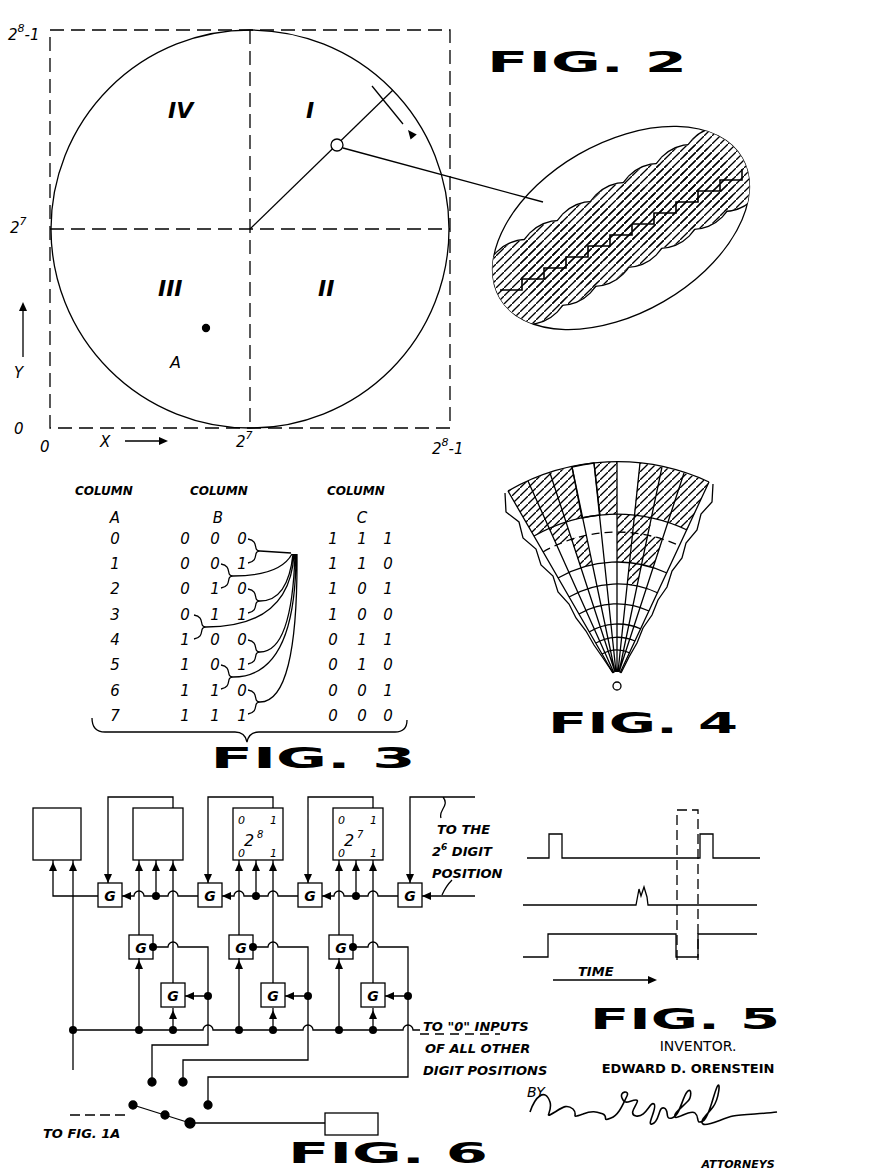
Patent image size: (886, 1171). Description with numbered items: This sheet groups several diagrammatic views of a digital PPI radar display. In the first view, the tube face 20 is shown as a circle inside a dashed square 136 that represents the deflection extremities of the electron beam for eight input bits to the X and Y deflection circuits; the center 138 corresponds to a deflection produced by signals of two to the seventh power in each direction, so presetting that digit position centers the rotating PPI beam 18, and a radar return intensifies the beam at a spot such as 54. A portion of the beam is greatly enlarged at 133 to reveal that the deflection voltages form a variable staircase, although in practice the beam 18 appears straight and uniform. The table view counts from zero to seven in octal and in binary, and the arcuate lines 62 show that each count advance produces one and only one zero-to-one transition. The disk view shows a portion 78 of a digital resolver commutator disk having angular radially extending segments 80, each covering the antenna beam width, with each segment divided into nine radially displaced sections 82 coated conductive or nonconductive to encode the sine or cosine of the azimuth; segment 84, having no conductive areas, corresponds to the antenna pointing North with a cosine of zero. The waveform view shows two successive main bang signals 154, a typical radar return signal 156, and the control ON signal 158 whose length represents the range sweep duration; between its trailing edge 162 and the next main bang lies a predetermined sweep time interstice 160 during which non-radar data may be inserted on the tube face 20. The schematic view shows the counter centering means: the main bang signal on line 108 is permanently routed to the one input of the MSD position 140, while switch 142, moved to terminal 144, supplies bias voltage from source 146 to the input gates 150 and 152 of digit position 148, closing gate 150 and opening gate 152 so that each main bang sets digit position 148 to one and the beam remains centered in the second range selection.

In FIG. 2, the rotating PPI beam 18 is at (362, 120).
In FIG. 2, the center 138 is at (262, 226).
In FIG. 2, the intensified spot 54 is at (237, 312).
In FIG. 2, the tube face 20 is at (370, 376).
In FIG. 2, the dashed square 136 is at (452, 397).
In FIG. 2, the enlarged portion 133 is at (640, 138).
In FIG. 3, the arcuate lines 62 is at (249, 622).
In FIG. 4, the segment 84 is at (590, 476).
In FIG. 4, the angular radially extending segments 80 is at (690, 478).
In FIG. 4, the radially displaced sections 82 is at (677, 553).
In FIG. 4, the portion of digital resolver commutator disk 78 is at (560, 610).
In FIG. 5, the sweep time interstice 160 is at (690, 808).
In FIG. 5, the main bang signals 154 is at (700, 845).
In FIG. 5, the radar return signal 156 is at (636, 896).
In FIG. 5, the control ON signal 158 is at (598, 938).
In FIG. 5, the trailing edge 162 is at (690, 936).
In FIG. 6, the MSD position 140 is at (70, 808).
In FIG. 6, the digit position 148 is at (172, 812).
In FIG. 6, the input gate 150 is at (150, 936).
In FIG. 6, the input gate 152 is at (193, 977).
In FIG. 6, the main bang signal line 108 is at (73, 1068).
In FIG. 6, the terminal 144 is at (149, 1083).
In FIG. 6, the switch 142 is at (212, 1116).
In FIG. 6, the bias voltage source 146 is at (380, 1126).